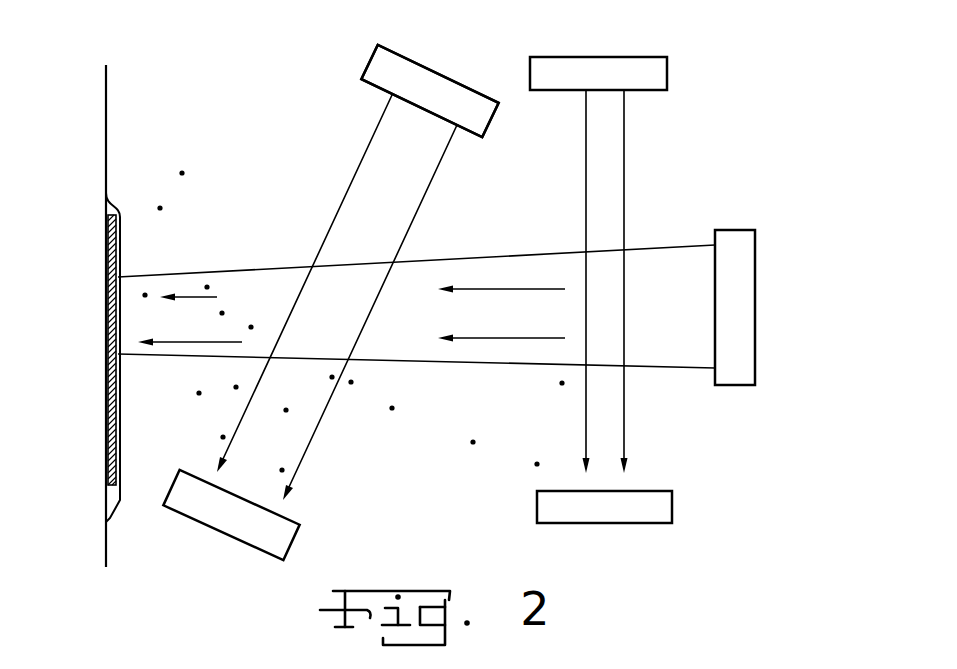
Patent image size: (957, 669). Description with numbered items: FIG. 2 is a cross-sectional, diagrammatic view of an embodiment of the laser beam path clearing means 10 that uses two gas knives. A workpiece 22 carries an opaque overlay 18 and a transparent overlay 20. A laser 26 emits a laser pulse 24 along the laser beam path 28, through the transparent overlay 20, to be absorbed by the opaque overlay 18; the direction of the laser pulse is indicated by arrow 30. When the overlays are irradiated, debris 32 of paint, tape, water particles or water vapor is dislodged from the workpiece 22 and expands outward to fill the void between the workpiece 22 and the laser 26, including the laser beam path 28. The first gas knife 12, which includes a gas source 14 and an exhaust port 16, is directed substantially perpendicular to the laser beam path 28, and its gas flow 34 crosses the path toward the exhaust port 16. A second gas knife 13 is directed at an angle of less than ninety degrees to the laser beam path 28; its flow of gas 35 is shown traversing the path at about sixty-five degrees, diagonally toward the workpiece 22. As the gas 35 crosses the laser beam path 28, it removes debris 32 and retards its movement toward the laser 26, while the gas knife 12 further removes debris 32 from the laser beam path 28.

The laser beam path clearing means 10 is at (715, 117).
The gas knife 12 is at (508, 79).
The second gas knife 13 is at (362, 96).
The gas source 14 is at (665, 68).
The exhaust port 16 is at (302, 526).
The opaque overlay 18 is at (108, 300).
The transparent overlay 20 is at (108, 208).
The workpiece 22 is at (106, 145).
The laser pulse 24 is at (198, 275).
The laser 26 is at (755, 385).
The laser beam path 28 is at (605, 358).
The arrow 30 is at (183, 342).
The debris 32 is at (182, 171).
The light beam 34 is at (585, 189).
The flow of gas 35 is at (356, 172).